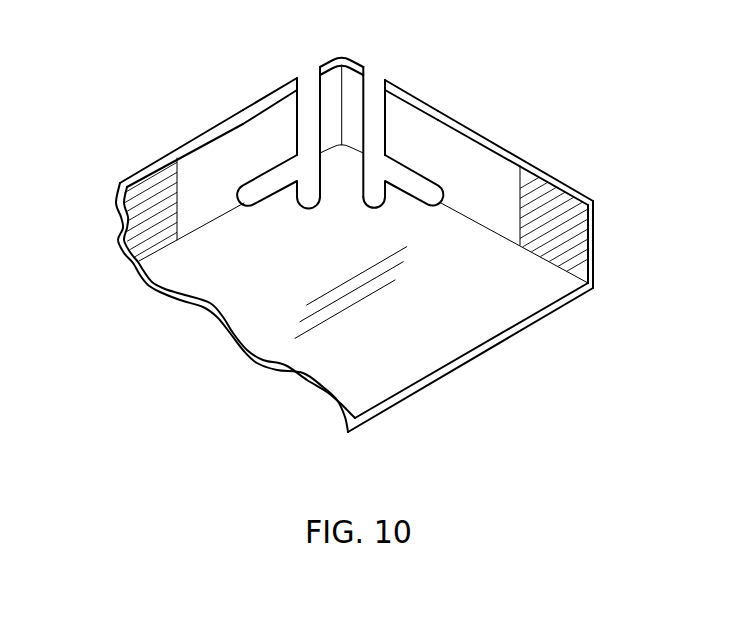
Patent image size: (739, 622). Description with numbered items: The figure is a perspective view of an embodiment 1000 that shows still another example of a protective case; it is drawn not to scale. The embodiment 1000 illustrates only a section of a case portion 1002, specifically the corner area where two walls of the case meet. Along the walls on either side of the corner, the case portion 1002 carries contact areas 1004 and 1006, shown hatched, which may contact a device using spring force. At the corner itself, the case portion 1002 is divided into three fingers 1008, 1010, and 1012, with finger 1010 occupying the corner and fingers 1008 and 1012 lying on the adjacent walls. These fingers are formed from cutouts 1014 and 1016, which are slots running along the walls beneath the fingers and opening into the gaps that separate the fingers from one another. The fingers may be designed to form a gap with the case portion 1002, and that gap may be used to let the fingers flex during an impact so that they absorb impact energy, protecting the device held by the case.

The embodiment 1000 is at (597, 420).
The case portion 1002 is at (595, 249).
The contact area 1004 is at (537, 190).
The contact area 1006 is at (160, 178).
The finger 1008 is at (278, 120).
The finger 1010 is at (356, 60).
The finger 1012 is at (408, 128).
The cutout 1014 is at (425, 190).
The cutout 1016 is at (255, 193).